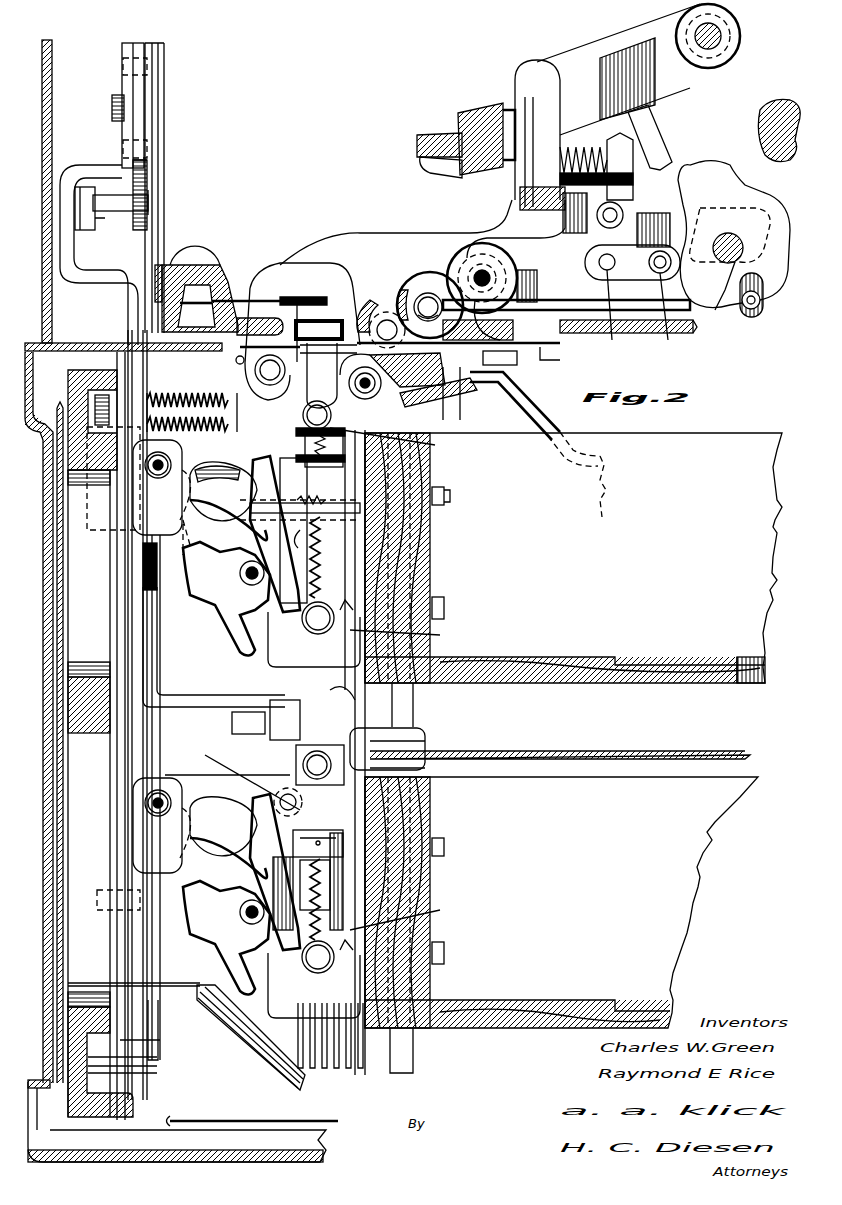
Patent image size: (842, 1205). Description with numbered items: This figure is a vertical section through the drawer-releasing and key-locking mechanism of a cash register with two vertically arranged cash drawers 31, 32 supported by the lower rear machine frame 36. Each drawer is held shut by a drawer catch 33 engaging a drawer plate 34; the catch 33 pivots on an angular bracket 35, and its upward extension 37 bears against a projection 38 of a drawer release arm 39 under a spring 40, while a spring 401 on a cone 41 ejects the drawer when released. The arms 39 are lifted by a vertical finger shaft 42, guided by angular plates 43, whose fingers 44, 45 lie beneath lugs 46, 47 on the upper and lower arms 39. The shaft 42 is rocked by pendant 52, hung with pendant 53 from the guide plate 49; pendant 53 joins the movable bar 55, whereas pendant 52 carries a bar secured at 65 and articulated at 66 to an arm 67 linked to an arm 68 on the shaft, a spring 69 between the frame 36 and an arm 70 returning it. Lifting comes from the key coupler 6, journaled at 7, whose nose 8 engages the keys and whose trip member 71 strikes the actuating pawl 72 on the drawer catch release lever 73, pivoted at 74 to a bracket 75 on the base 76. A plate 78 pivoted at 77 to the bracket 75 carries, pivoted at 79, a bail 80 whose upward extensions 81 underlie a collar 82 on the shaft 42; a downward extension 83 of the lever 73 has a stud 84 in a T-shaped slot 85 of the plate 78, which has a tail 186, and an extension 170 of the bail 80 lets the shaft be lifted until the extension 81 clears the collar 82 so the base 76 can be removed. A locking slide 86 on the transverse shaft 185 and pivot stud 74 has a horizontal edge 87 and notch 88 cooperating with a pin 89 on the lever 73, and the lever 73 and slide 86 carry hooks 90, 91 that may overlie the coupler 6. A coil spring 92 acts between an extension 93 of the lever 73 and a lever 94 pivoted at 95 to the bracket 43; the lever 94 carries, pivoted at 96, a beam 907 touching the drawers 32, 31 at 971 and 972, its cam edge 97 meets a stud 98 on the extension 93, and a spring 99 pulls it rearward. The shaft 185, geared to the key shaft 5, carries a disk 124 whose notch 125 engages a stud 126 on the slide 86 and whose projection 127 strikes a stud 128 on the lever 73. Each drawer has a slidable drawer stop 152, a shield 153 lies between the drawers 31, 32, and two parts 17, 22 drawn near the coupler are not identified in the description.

The key shaft 5 is at (760, 125).
The key coupler 6 is at (650, 28).
The journal 7 is at (722, 36).
The nose 8 is at (450, 178).
The key block 17 is at (480, 120).
The key stop 22 is at (417, 150).
The upper cash drawer 31 is at (430, 565).
The lower cash drawer 32 is at (430, 810).
The drawer catch 33 is at (306, 957).
The drawer plate 34 is at (445, 877).
The angular bracket 35 is at (226, 757).
The lower rear machine frame 36 is at (104, 743).
The upward extension 37 is at (275, 703).
The projection 38 is at (255, 812).
The drawer release arm 39 is at (185, 790).
The spring 40 is at (345, 790).
The cone 41 is at (258, 1050).
The finger shaft 42 is at (322, 826).
The angular plate 43 is at (180, 1022).
The finger 44 is at (392, 441).
The finger 45 is at (270, 725).
The lug 46 is at (330, 412).
The lug 47 is at (330, 760).
The guide plate 49 is at (158, 175).
The pendant 52 is at (138, 130).
The pendant 53 is at (150, 200).
The movable bar 55 is at (88, 232).
The securing point 65 is at (122, 150).
The pivotal connection 66 is at (143, 555).
The arm 67 is at (195, 690).
The arm 68 is at (232, 722).
The spring 69 is at (165, 475).
The arm 70 is at (290, 480).
The trip member 71 is at (660, 122).
The actuating pawl 72 is at (633, 175).
The drawer catch release lever 73 is at (422, 226).
The pivot stud 74 is at (537, 283).
The bracket 75 is at (430, 290).
The base 76 is at (222, 258).
The pivot 77 is at (430, 297).
The plate 78 is at (435, 372).
The pivot 79 is at (375, 383).
The bail 80 is at (430, 400).
The upward extension 81 is at (320, 360).
The collar 82 is at (310, 322).
The downward extension 83 is at (365, 305).
The stud 84 is at (385, 320).
The T shaped slot 85 is at (430, 320).
The locking slide 86 is at (655, 213).
The horizontal edge 87 is at (655, 270).
The notch 88 is at (600, 270).
The pin 89 is at (618, 314).
The hook 90 is at (545, 70).
The hook 91 is at (515, 182).
The coil spring 92 is at (320, 540).
The extension 93 is at (262, 352).
The lever 94 is at (235, 465).
The pivot 95 is at (320, 505).
The pivot 96 is at (232, 777).
The cam edge 97 is at (297, 297).
The stud 98 is at (238, 356).
The spring 99 is at (165, 393).
The disk 124 is at (740, 243).
The notch 125 is at (760, 310).
The stud 126 is at (750, 310).
The projection 127 is at (734, 234).
The stud 128 is at (667, 314).
The drawer stop 152 is at (460, 838).
The shield 153 is at (640, 751).
The extension 170 is at (470, 395).
The transverse shaft 185 is at (720, 295).
The tail 186 is at (517, 362).
The drawer release spring 401 is at (315, 1068).
The beam 907 is at (365, 692).
The contact point 971 is at (407, 916).
The contact point 972 is at (407, 635).